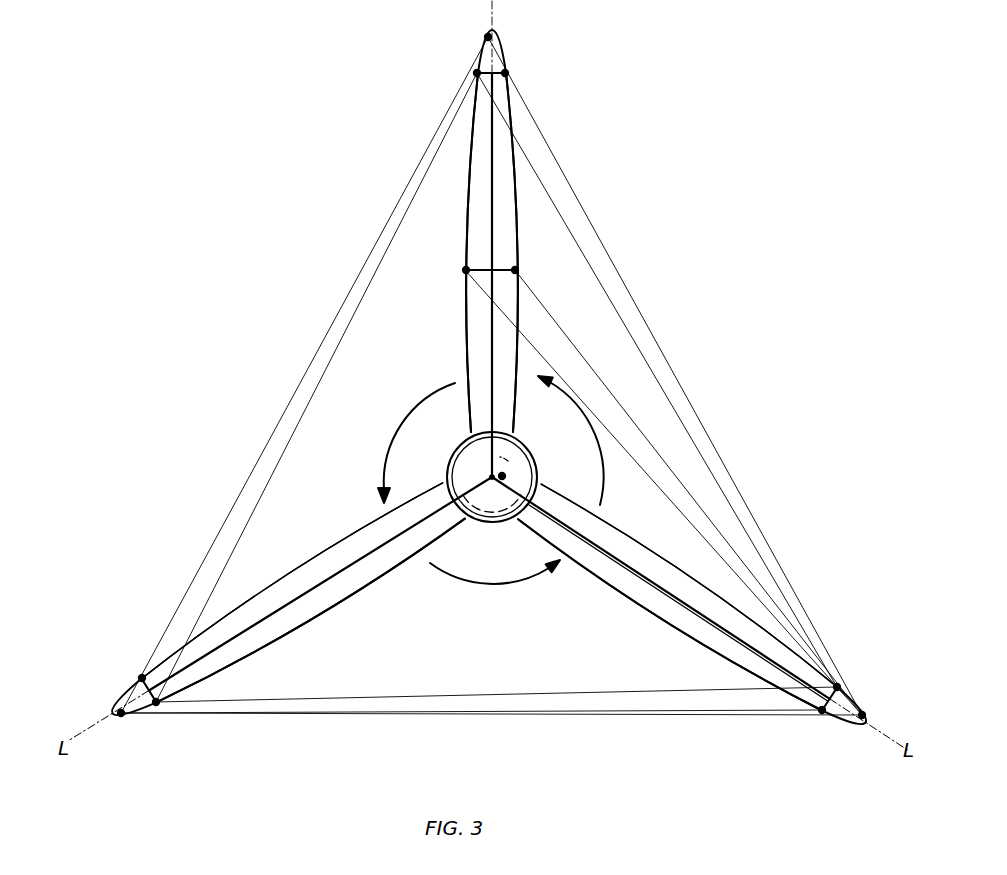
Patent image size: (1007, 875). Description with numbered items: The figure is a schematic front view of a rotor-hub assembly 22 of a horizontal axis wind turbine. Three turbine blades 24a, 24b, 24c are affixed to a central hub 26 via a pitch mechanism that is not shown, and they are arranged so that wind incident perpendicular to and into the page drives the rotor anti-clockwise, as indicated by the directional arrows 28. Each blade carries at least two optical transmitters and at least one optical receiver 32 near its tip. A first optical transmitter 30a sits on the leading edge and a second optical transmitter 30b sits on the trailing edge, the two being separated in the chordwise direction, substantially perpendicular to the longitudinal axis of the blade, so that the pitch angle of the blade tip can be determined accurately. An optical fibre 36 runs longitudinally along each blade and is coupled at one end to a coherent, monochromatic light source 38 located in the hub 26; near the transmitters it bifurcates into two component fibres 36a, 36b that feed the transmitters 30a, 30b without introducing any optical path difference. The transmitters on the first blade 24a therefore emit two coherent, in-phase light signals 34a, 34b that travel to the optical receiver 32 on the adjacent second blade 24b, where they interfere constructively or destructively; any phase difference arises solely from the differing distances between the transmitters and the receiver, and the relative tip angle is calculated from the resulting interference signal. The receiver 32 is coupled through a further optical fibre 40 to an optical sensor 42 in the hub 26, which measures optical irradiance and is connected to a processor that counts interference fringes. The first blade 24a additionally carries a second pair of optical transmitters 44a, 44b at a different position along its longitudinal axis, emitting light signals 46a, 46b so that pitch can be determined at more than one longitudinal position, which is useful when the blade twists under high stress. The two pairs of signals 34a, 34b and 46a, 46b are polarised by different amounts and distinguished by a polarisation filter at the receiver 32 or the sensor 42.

The rotor-hub assembly 22 is at (680, 237).
The first blade 24a is at (500, 50).
The second blade 24b is at (700, 645).
The third blade 24c is at (272, 643).
The central hub 26 is at (518, 447).
The directional arrows 28 is at (455, 383).
The first optical transmitter 30a is at (475, 73).
The second optical transmitter 30b is at (507, 73).
The optical receiver 32 is at (486, 37).
The first light signal 34a is at (598, 282).
The second light signal 34b is at (580, 205).
The optical fibre 36 is at (488, 198).
The first component fibre 36a is at (470, 88).
The second component fibre 36b is at (512, 90).
The light source 38 is at (490, 476).
The optical fibre 40 is at (627, 578).
The optical sensor 42 is at (505, 476).
The third optical transmitter 44a is at (464, 270).
The fourth optical transmitter 44b is at (517, 270).
The third light signal 46a is at (668, 498).
The fourth light signal 46b is at (600, 378).